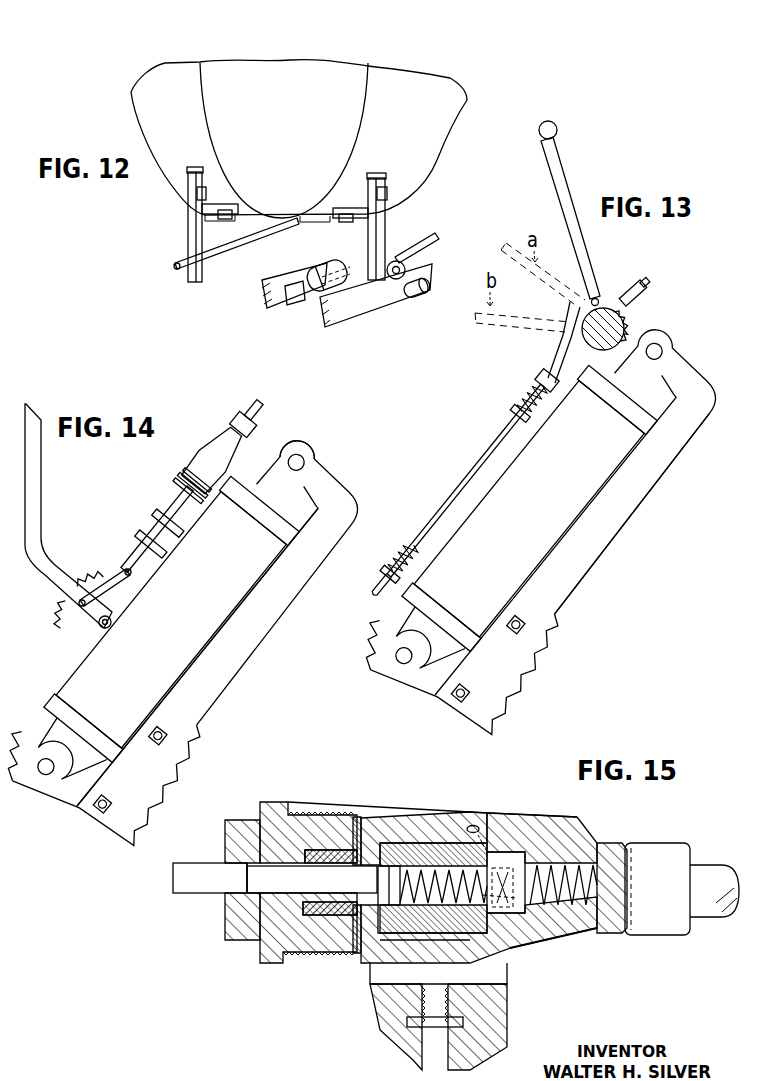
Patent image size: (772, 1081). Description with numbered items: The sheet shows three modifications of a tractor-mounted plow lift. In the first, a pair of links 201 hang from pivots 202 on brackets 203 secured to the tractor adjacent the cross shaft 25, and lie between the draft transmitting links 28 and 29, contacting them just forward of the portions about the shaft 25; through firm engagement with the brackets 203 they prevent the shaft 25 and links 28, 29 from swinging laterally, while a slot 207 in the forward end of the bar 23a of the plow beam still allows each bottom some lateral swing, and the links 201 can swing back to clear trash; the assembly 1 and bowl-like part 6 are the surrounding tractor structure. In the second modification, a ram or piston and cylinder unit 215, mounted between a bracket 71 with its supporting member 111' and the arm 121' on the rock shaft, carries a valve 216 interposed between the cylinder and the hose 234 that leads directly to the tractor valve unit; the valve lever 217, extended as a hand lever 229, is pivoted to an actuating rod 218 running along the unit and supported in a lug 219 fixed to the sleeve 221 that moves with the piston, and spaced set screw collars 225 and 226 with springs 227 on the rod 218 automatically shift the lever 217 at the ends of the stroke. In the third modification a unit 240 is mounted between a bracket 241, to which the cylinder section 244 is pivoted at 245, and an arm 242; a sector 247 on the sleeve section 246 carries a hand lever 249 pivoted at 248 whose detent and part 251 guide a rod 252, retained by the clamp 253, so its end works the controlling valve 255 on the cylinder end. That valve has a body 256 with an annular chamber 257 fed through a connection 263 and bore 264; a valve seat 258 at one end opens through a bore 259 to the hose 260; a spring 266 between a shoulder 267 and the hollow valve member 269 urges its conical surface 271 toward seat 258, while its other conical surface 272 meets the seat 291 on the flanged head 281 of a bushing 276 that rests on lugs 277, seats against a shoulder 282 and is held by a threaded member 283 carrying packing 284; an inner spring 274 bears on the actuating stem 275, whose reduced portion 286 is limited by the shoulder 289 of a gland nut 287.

In FIG. 12, the dental handpiece assembly 1 is at (350, 50).
In FIG. 12, the bowl 6 is at (442, 110).
In FIG. 12, the links 201 is at (192, 228).
In FIG. 12, the pivots 202 is at (381, 193).
In FIG. 12, the brackets 203 is at (200, 192).
In FIG. 12, the cross shaft 25 is at (279, 267).
In FIG. 12, the draft transmitting link 28 is at (231, 246).
In FIG. 12, the draft transmitting link 29 is at (430, 243).
In FIG. 12, the slot 207 is at (418, 294).
In FIG. 12, the bar 23a is at (343, 312).
In FIG. 13, the hand lever 229 is at (565, 185).
In FIG. 13, the valve operating lever 217 is at (592, 306).
In FIG. 13, the hose 234 is at (643, 287).
In FIG. 13, the valve 216 is at (637, 327).
In FIG. 13, the set screw collar 226 is at (548, 376).
In FIG. 13, the spring 227 is at (535, 390).
In FIG. 13, the lug 219 is at (524, 397).
In FIG. 13, the actuating rod 218 is at (488, 452).
In FIG. 13, the piston and cylinder unit 215 is at (480, 497).
In FIG. 13, the sleeve 221 is at (587, 488).
In FIG. 13, the frame arm 111' is at (604, 477).
In FIG. 13, the bracket 71 is at (540, 635).
In FIG. 14, the bracket 71 is at (177, 748).
In FIG. 13, the pivot clevis 121' is at (396, 653).
In FIG. 13, the set screw collar 225 is at (393, 556).
In FIG. 14, the hand lever 249 is at (34, 490).
In FIG. 14, the sector 247 is at (100, 572).
In FIG. 14, the pivot 248 is at (111, 624).
In FIG. 14, the part 251 is at (110, 587).
In FIG. 14, the rod 252 is at (163, 532).
In FIG. 14, the clamp plate 253 is at (170, 544).
In FIG. 14, the controlling valve 255 is at (200, 450).
In FIG. 15, the controlling valve 255 is at (348, 798).
In FIG. 14, the connection 263 is at (235, 477).
In FIG. 15, the connection 263 is at (407, 1008).
In FIG. 14, the sleeve section 246 is at (82, 677).
In FIG. 14, the bracket 241 is at (253, 637).
In FIG. 14, the piston and cylinder unit 240 is at (260, 577).
In FIG. 14, the cylinder section 244 is at (312, 456).
In FIG. 15, the cylinder section 244 is at (393, 1043).
In FIG. 14, the pivot 245 is at (302, 468).
In FIG. 14, the arm 242 is at (20, 773).
In FIG. 15, the threaded member 283 is at (307, 822).
In FIG. 15, the shoulder 289 is at (228, 865).
In FIG. 15, the gland nut 287 is at (233, 931).
In FIG. 15, the reduced portion 286 is at (210, 884).
In FIG. 15, the conical valve surface 272 is at (370, 890).
In FIG. 15, the valve actuating stem 275 is at (273, 886).
In FIG. 15, the packing 284 is at (317, 915).
In FIG. 15, the shoulder 282 is at (377, 822).
In FIG. 15, the valve seat 291 is at (376, 874).
In FIG. 15, the flanged head 281 is at (383, 822).
In FIG. 15, the annular internal chamber 257 is at (410, 825).
In FIG. 15, the valve seat 258 is at (540, 837).
In FIG. 15, the valve body 256 is at (467, 807).
In FIG. 15, the lugs 277 is at (480, 830).
In FIG. 15, the bushing 276 is at (433, 827).
In FIG. 15, the shiftable valve member 269 is at (500, 847).
In FIG. 15, the spring 266 is at (583, 913).
In FIG. 15, the conical valve surface 271 is at (527, 913).
In FIG. 15, the shoulder 267 is at (587, 870).
In FIG. 15, the bore 259 is at (628, 887).
In FIG. 15, the hose 260 is at (707, 873).
In FIG. 15, the spring 274 is at (383, 943).
In FIG. 15, the bore 264 is at (497, 1010).